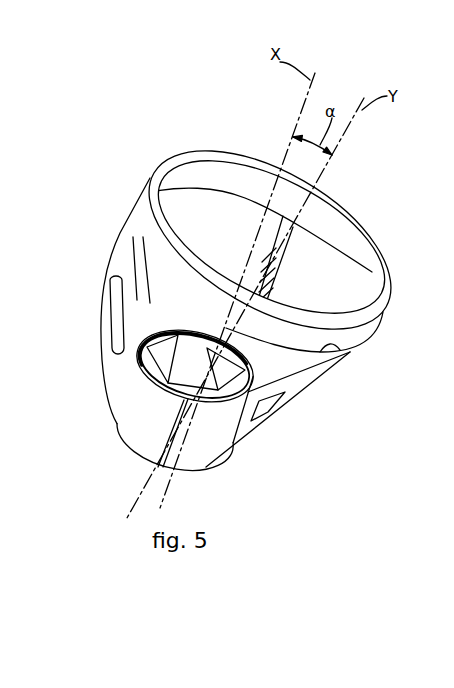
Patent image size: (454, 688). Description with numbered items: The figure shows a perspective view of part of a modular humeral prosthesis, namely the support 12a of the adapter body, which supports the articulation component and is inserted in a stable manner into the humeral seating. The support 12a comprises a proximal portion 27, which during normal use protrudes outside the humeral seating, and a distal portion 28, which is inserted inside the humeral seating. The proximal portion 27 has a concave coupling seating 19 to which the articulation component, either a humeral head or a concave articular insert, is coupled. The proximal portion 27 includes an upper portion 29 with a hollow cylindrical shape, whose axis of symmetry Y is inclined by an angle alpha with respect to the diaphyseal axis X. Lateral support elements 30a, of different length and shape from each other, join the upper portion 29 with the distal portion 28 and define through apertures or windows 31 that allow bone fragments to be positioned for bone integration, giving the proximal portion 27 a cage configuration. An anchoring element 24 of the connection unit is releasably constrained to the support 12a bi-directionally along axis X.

The support 12a is at (340, 200).
The coupling seating 19 is at (328, 291).
The anchoring element 24 is at (213, 403).
The proximal portion 27 is at (82, 211).
The distal portion 28 is at (112, 440).
The upper portion 29 is at (150, 178).
The lateral support elements 30a is at (283, 263).
The through apertures or windows 31 is at (148, 296).